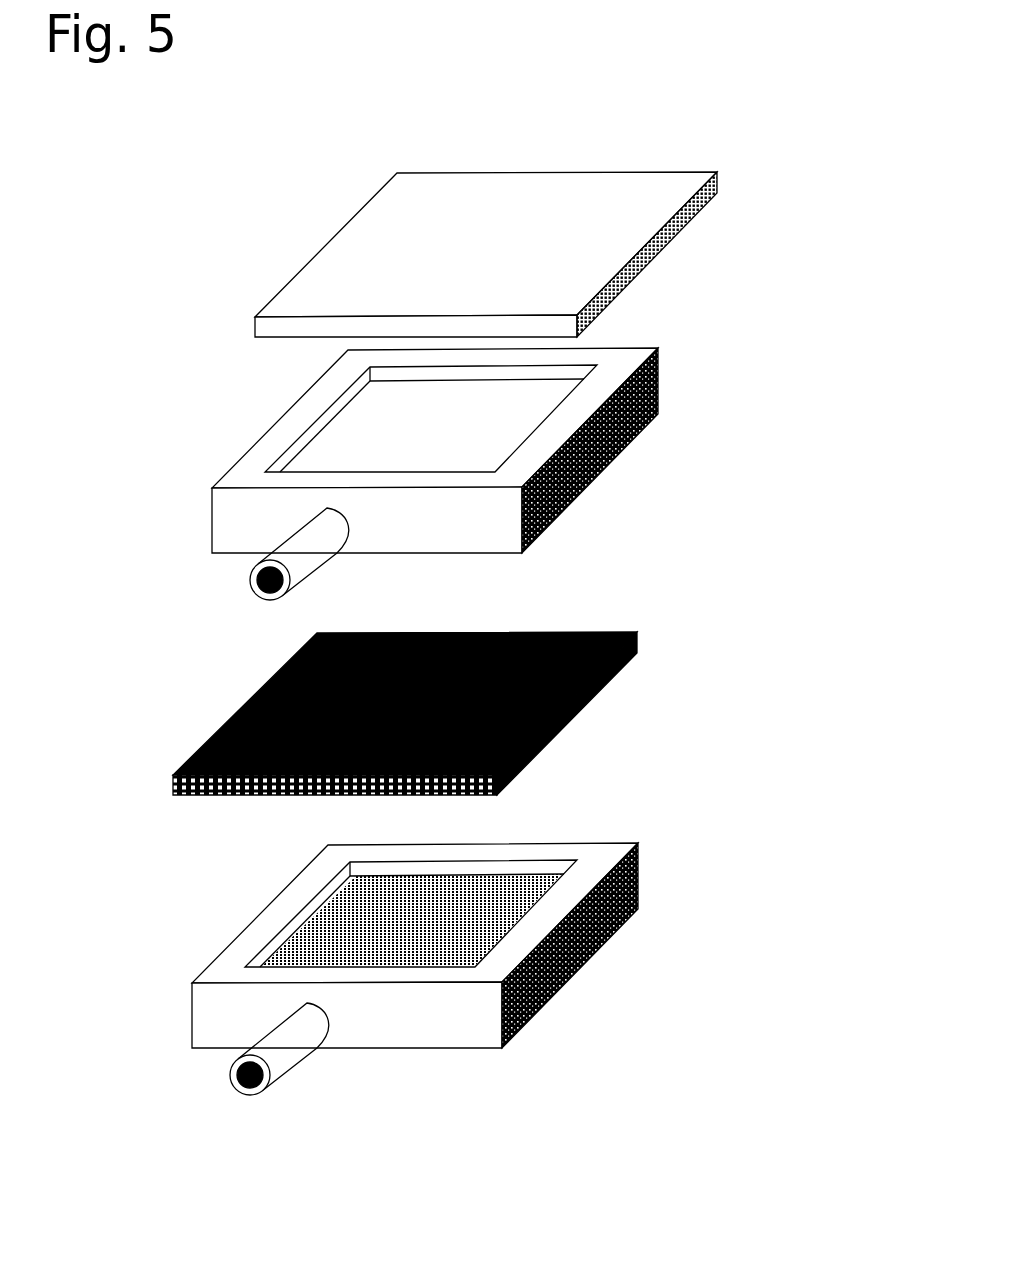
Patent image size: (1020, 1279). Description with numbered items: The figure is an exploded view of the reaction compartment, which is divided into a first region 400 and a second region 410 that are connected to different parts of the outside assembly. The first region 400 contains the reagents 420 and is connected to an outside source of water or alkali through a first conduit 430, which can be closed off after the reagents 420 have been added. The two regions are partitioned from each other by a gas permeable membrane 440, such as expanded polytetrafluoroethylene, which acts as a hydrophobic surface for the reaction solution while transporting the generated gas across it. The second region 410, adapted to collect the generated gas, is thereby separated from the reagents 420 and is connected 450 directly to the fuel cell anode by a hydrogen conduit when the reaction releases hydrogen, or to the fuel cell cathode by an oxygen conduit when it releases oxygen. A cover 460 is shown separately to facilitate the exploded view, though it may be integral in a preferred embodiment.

The first region 400 is at (618, 930).
The second region 410 is at (653, 418).
The reagents 420 is at (327, 918).
The first conduit 430 is at (232, 1070).
The gas permeable membrane 440 is at (603, 688).
The connection 450 is at (250, 567).
The cover 460 is at (680, 227).